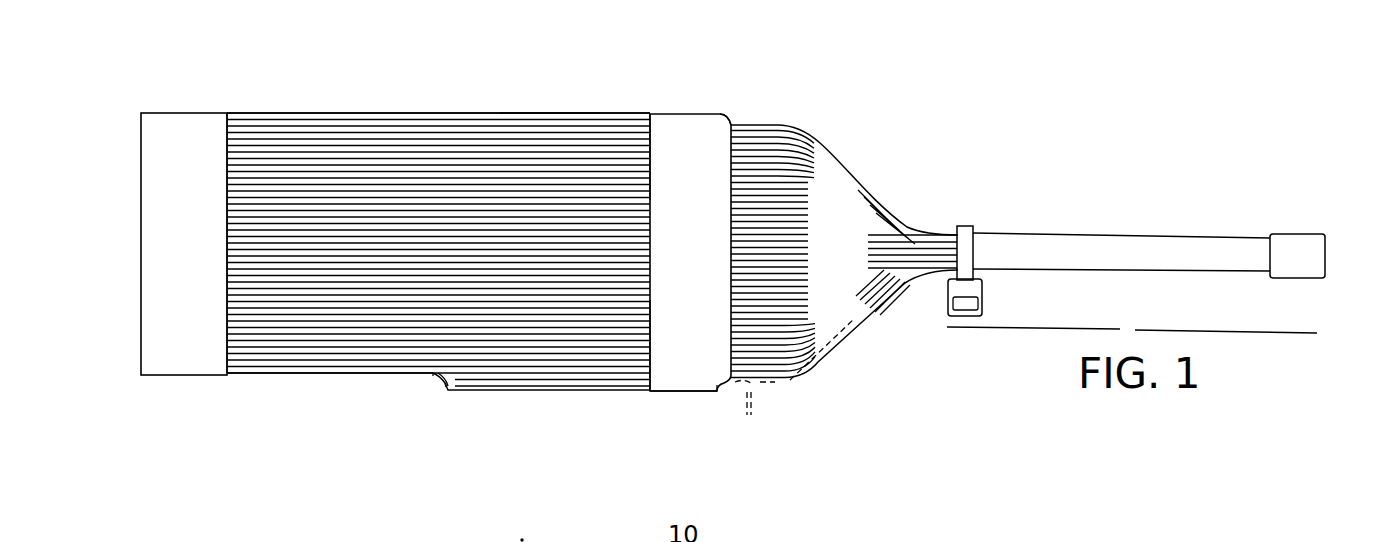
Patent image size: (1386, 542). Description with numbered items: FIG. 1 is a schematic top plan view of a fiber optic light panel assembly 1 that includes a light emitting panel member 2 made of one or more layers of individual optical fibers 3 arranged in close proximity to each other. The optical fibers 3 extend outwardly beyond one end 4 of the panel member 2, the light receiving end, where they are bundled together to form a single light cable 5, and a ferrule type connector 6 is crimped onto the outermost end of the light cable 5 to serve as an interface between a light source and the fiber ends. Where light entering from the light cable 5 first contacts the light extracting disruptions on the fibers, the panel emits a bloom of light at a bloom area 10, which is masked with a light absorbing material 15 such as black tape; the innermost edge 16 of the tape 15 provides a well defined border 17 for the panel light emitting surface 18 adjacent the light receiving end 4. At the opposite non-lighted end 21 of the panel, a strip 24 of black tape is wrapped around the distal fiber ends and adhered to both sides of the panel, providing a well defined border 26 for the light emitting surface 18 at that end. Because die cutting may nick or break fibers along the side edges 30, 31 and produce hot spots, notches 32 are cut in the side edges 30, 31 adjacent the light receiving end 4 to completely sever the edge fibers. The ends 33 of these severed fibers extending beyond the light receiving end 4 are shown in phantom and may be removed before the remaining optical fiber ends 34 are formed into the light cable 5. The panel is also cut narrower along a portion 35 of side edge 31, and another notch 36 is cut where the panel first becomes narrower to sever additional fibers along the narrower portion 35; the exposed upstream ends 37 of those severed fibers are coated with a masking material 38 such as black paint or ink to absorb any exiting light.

The fiber optic light panel assembly 1 is at (525, 70).
The light emitting panel member 2 is at (736, 261).
The optical fibers 3 is at (532, 113).
The end of panel member 4 is at (748, 147).
The light cable 5 is at (1086, 258).
The ferrule type connector 6 is at (1293, 242).
The bloom area 10 is at (747, 248).
The light absorbing material 15 is at (680, 380).
The innermost edge of tape 16 is at (642, 372).
The border 17 is at (641, 138).
The light emitting surface 18 is at (376, 332).
The non-lighted end of light panel 21 is at (184, 249).
The strip of black tape 24 is at (178, 128).
The border 26 is at (228, 141).
The side edge 30 is at (410, 113).
The side edge 31 is at (567, 393).
The notches 32 is at (723, 118).
The ends of severed optical fibers 33 is at (795, 384).
The remaining optical fiber ends 34 is at (875, 285).
The narrower portion 35 is at (297, 377).
The notch 36 is at (427, 374).
The exposed upstream ends 37 is at (457, 380).
The masking material 38 is at (443, 384).